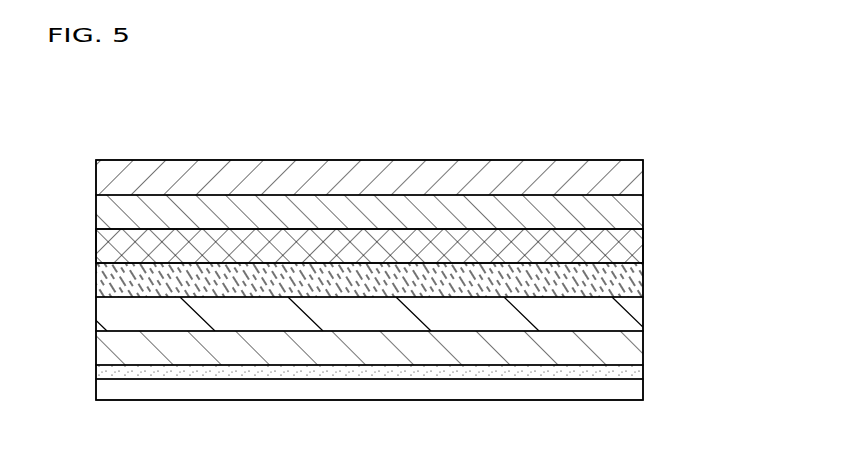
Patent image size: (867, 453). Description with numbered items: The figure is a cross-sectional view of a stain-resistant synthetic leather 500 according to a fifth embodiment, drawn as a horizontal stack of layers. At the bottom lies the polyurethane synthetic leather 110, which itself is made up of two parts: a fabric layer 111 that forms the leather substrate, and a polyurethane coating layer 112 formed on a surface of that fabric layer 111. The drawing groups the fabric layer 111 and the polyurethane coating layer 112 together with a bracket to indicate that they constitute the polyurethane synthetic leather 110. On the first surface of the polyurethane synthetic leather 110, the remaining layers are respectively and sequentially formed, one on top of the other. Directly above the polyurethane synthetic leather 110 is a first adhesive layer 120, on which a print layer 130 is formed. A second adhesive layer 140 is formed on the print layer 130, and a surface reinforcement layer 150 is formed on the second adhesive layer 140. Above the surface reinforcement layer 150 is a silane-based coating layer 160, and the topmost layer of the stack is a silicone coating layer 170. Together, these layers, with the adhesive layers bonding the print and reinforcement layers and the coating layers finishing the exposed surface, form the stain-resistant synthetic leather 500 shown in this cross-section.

The stain-resistant synthetic leather 500 is at (124, 112).
The silicone coating layer 170 is at (635, 173).
The silane-based coating layer 160 is at (635, 205).
The surface reinforcement layer 150 is at (635, 239).
The second adhesive layer 140 is at (635, 273).
The print layer 130 is at (635, 307).
The first adhesive layer 120 is at (635, 341).
The polyurethane coating layer 112 is at (635, 368).
The fabric layer 111 is at (635, 389).
The polyurethane synthetic leather 110 is at (434, 385).